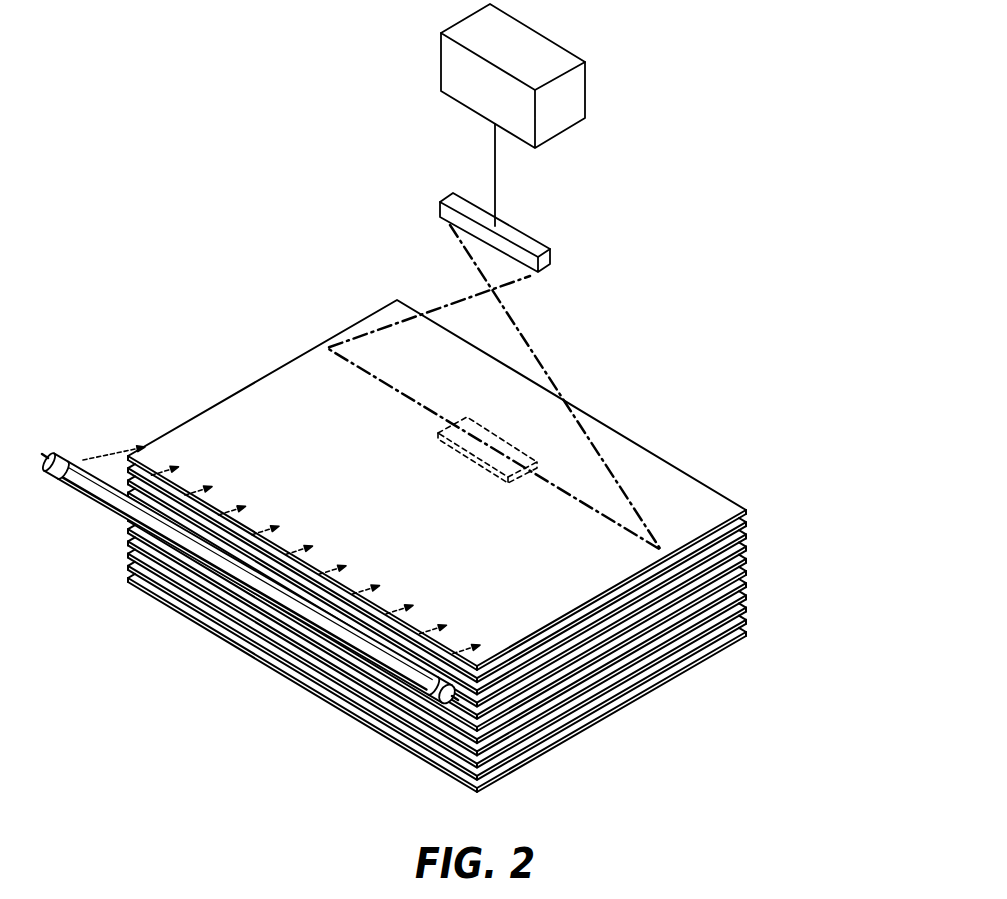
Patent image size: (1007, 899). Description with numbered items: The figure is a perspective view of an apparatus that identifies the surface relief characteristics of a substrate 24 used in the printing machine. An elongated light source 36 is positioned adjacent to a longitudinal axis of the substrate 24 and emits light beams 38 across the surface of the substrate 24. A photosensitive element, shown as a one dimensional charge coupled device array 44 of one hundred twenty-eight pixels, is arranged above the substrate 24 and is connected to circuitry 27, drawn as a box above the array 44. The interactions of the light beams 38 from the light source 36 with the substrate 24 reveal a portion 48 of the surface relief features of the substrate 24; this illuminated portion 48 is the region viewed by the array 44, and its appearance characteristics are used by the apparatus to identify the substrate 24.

The substrate 24 is at (277, 392).
The circuitry 27 is at (525, 33).
The elongated light source 36 is at (58, 452).
The light beams 38 is at (264, 528).
The charge coupled device array 44 is at (535, 248).
The illuminated portion 48 is at (457, 445).